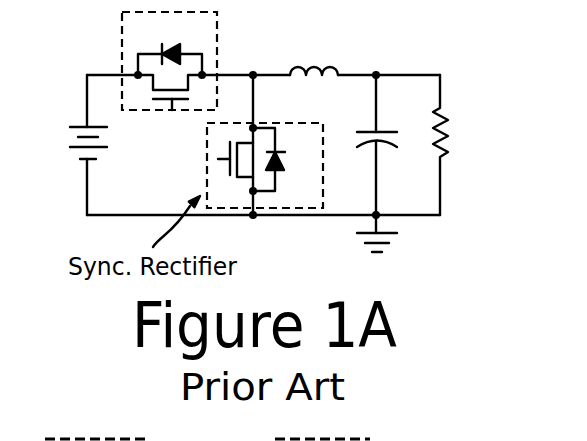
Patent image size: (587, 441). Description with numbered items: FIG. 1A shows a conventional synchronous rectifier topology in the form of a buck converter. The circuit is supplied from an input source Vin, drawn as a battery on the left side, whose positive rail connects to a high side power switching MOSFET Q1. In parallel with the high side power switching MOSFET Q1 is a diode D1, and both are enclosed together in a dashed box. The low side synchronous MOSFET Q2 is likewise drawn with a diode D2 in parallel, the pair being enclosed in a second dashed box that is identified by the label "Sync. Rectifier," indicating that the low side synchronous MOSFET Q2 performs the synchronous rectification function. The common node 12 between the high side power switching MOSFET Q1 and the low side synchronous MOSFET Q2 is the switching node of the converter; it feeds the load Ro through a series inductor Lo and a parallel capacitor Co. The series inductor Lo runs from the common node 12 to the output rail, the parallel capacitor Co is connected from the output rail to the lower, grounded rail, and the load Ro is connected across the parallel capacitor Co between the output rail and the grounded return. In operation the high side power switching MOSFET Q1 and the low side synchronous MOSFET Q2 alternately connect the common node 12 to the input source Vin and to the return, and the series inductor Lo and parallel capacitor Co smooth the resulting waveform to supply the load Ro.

The switching node 12 is at (253, 71).
The input voltage source Vin is at (75, 145).
The diode of main switch D1 is at (170, 46).
The high side power switching MOSFET Q1 is at (163, 94).
The diode of synchronous rectifier D2 is at (286, 159).
The low side synchronous MOSFET Q2 is at (232, 176).
The series inductor Lo is at (314, 58).
The parallel capacitor Co is at (384, 145).
The load Ro is at (455, 145).